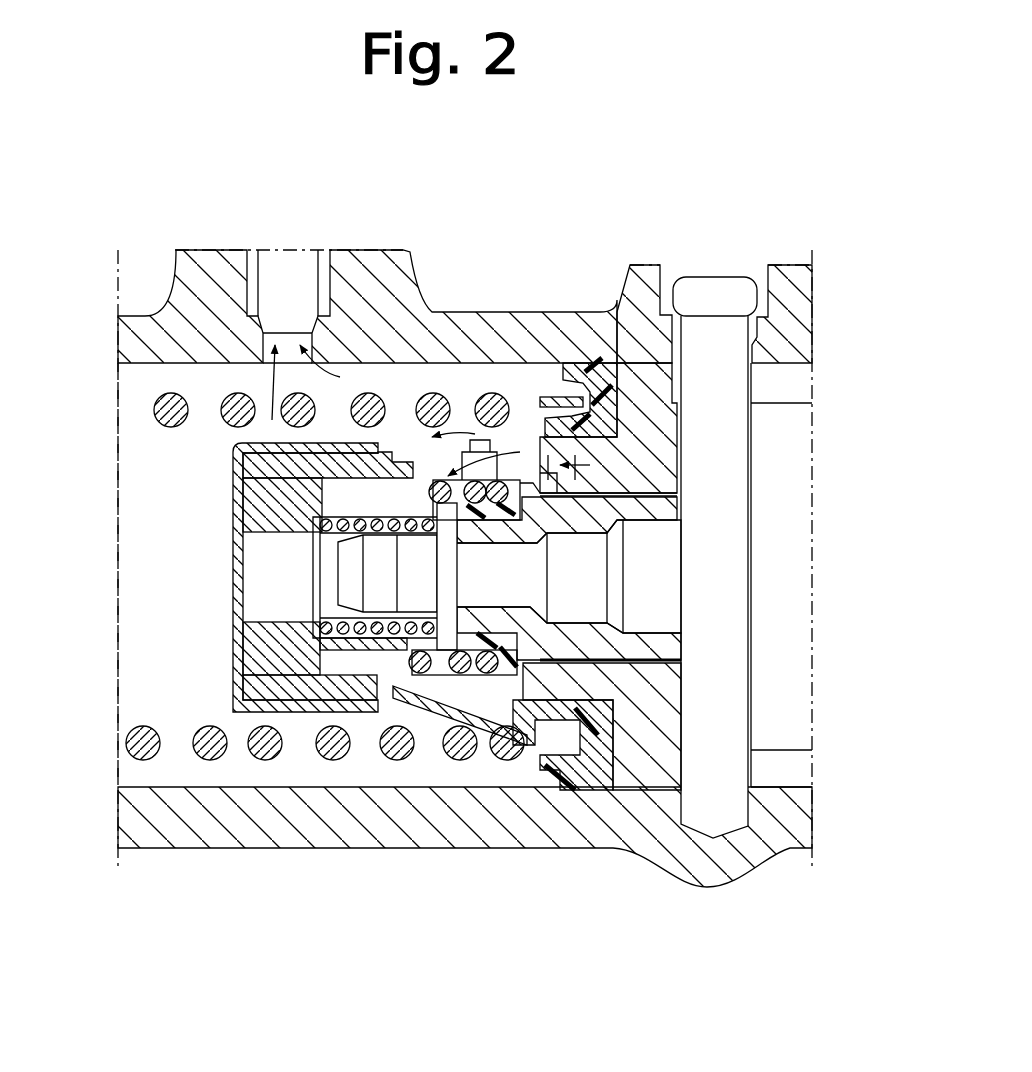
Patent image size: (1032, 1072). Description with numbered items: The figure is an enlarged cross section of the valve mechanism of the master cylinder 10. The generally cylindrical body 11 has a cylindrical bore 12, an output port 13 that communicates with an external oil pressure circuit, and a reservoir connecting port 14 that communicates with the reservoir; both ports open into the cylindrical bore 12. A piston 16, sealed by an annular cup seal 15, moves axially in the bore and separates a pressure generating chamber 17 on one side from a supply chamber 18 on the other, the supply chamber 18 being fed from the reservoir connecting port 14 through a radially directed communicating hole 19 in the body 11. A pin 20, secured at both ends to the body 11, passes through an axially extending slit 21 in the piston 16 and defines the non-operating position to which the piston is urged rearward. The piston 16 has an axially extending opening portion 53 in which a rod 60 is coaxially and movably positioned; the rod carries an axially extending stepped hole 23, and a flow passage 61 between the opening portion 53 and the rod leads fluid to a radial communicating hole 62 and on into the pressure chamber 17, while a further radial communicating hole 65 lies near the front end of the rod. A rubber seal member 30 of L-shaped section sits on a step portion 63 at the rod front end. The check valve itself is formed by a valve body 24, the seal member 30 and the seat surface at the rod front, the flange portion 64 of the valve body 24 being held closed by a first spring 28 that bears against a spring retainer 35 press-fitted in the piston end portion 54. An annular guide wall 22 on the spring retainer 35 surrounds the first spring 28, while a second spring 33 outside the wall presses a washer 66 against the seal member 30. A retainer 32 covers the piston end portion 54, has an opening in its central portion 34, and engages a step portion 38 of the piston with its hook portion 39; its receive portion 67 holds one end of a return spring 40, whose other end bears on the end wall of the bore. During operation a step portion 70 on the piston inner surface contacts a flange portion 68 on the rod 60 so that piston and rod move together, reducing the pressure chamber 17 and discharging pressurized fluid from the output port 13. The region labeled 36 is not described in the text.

The master cylinder 10 is at (790, 258).
The body 11 is at (585, 827).
The cylindrical bore 12 is at (790, 372).
The output port 13 is at (289, 262).
The reservoir connecting port 14 is at (667, 282).
The annular cup seal 15 is at (588, 363).
The piston 16 is at (647, 390).
The pressure generating chamber 17 is at (183, 713).
The supply chamber 18 is at (782, 772).
The communicating hole 19 is at (684, 345).
The pin 20 is at (712, 810).
The slit 21 is at (775, 412).
The annular guide wall 22 is at (372, 665).
The hole 23 is at (670, 583).
The valve body 24 is at (370, 575).
The first spring 28 is at (370, 638).
The seal member 30 is at (463, 470).
The retainer 32 is at (293, 703).
The second spring 33 is at (416, 652).
The central portion 34 is at (236, 610).
The spring retainer 35 is at (307, 667).
The piston chamber 36 is at (267, 552).
The step portion 38 is at (371, 300).
The hook portion 39 is at (437, 652).
The return spring 40 is at (158, 408).
The opening portion 53 is at (600, 672).
The piston end portion 54 is at (230, 487).
The rod 60 is at (648, 498).
The flow passage 61 is at (653, 490).
The communicating hole 62 is at (517, 443).
The step portion 63 is at (680, 640).
The flange portion 64 is at (425, 468).
The communicating hole 65 is at (415, 440).
The washer 66 is at (500, 750).
The receive portion 67 is at (530, 750).
The flange portion 68 is at (700, 535).
The step portion 70 is at (650, 462).